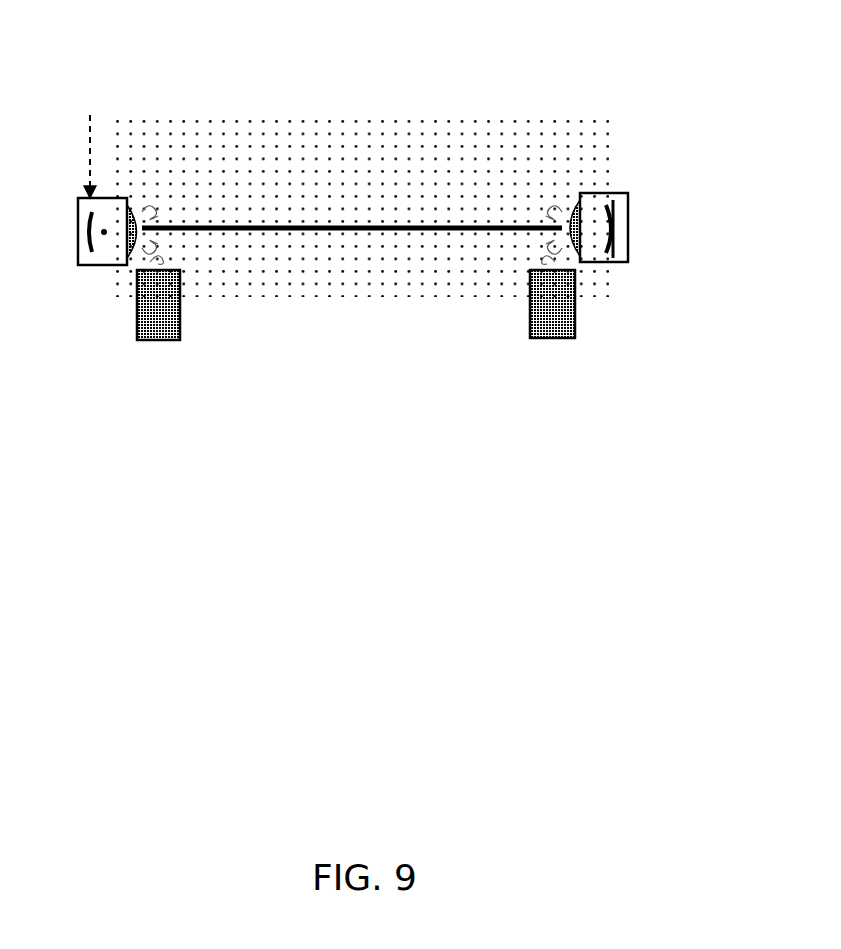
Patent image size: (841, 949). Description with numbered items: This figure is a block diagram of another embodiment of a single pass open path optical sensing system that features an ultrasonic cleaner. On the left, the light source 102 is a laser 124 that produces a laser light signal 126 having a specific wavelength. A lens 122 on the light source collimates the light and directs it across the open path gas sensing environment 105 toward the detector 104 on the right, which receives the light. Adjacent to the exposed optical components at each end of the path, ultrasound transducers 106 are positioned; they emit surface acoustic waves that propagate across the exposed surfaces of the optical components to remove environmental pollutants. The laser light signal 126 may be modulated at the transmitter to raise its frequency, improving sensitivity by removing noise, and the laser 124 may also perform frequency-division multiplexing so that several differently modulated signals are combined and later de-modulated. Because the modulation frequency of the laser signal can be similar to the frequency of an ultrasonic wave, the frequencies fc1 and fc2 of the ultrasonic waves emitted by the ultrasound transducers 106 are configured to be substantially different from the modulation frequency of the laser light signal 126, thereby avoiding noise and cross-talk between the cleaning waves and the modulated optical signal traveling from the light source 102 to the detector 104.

The light source 102 is at (100, 106).
The detector 104 is at (623, 193).
The open path gas sensing environment 105 is at (352, 106).
The ultrasound transducers 106 is at (245, 378).
The lens 122 is at (131, 206).
The laser 124 is at (103, 265).
The laser light signal 126 is at (388, 232).
The frequency of ultrasonic wave from first transducer fc1 is at (167, 250).
The frequency of ultrasonic wave from second transducer fc2 is at (543, 242).